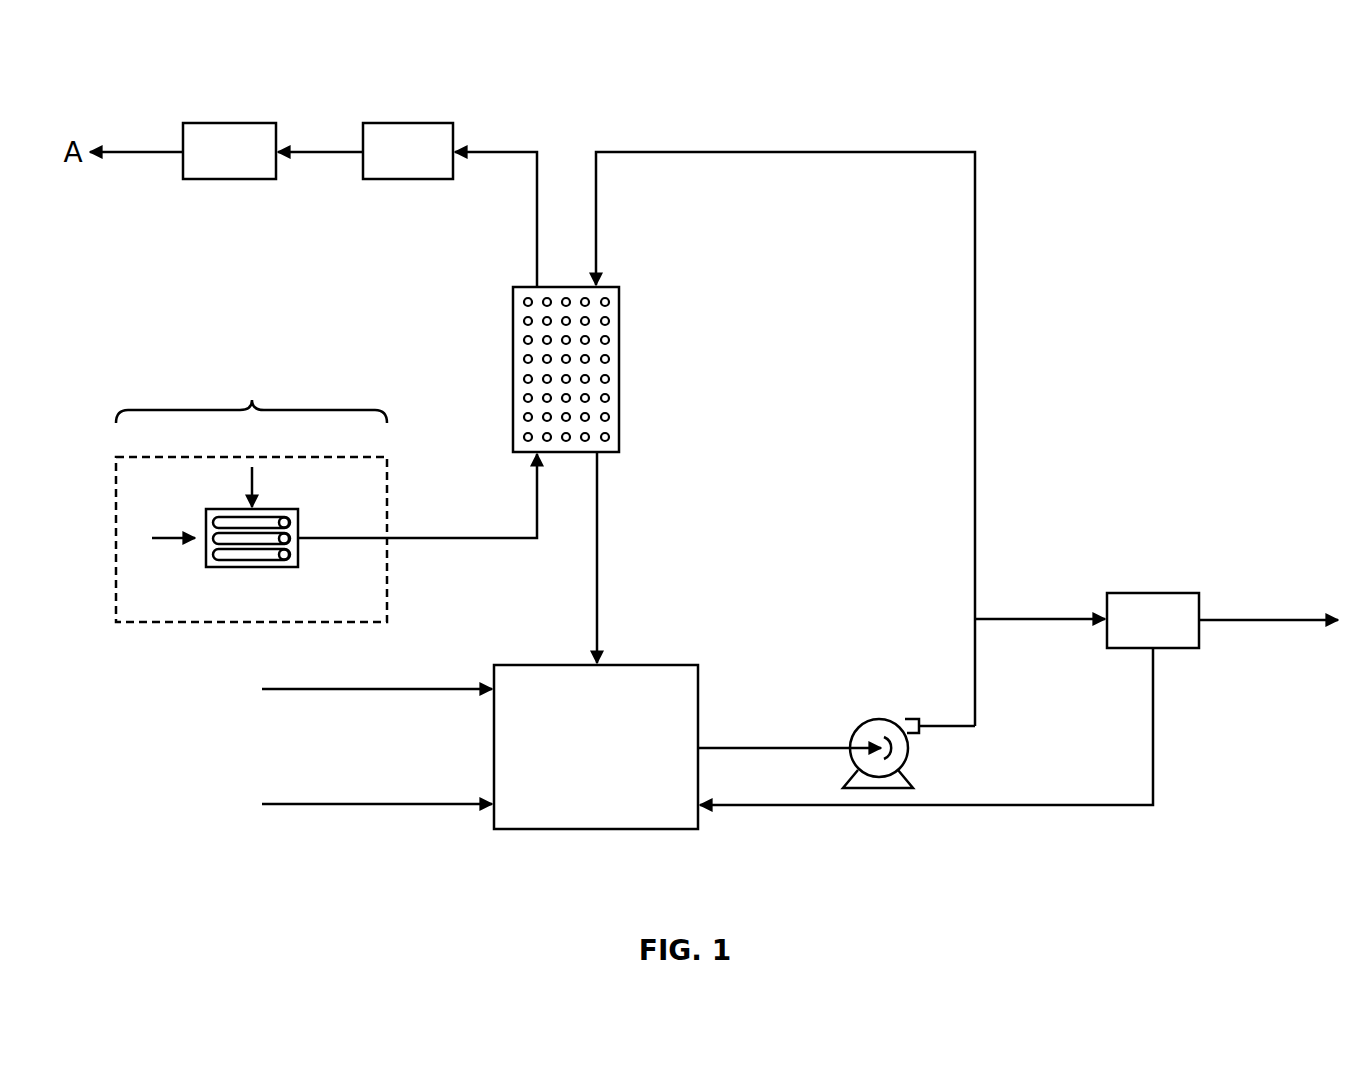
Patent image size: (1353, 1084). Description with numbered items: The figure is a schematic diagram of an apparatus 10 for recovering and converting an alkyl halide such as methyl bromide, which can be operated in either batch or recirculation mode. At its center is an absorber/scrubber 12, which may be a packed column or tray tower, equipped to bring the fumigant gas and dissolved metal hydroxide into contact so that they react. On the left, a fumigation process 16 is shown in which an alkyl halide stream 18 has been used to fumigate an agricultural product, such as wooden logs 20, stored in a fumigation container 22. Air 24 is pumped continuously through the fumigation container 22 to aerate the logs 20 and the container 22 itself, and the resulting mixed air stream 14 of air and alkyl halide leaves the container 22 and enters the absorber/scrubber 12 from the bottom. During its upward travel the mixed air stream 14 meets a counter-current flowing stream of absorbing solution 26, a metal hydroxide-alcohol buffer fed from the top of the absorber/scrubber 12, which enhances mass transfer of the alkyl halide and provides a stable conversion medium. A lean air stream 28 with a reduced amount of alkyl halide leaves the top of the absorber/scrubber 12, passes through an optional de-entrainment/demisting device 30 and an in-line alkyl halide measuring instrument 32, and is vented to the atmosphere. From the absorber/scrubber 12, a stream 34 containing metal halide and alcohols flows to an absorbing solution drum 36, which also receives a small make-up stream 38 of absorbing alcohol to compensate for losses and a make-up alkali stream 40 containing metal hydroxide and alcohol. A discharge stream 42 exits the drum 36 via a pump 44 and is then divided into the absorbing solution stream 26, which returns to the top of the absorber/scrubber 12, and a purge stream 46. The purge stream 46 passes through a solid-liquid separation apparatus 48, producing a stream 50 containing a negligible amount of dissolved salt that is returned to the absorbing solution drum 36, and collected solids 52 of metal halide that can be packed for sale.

The apparatus 10 is at (1086, 80).
The absorber/scrubber 12 is at (619, 370).
The mixed air stream 14 is at (452, 538).
The fumigation process 16 is at (251, 494).
The alkyl halide stream 18 is at (253, 475).
The wooden logs 20 is at (222, 516).
The fumigation container 22 is at (208, 567).
The air 24 is at (174, 536).
The absorbing solution stream 26 is at (786, 152).
The lean air stream 28 is at (537, 213).
The de-entrainment/demisting device 30 is at (409, 123).
The in-line alkyl halide measuring instrument 32 is at (230, 123).
The stream 34 is at (597, 535).
The absorbing solution drum 36 is at (595, 830).
The make-up stream 38 is at (388, 688).
The make-up alkali stream 40 is at (388, 803).
The discharge stream 42 is at (762, 747).
The pump 44 is at (873, 719).
The purge stream 46 is at (1030, 619).
The solid-liquid separation apparatus 48 is at (1147, 593).
The return stream 50 is at (1153, 715).
The collected solids 52 is at (1272, 620).